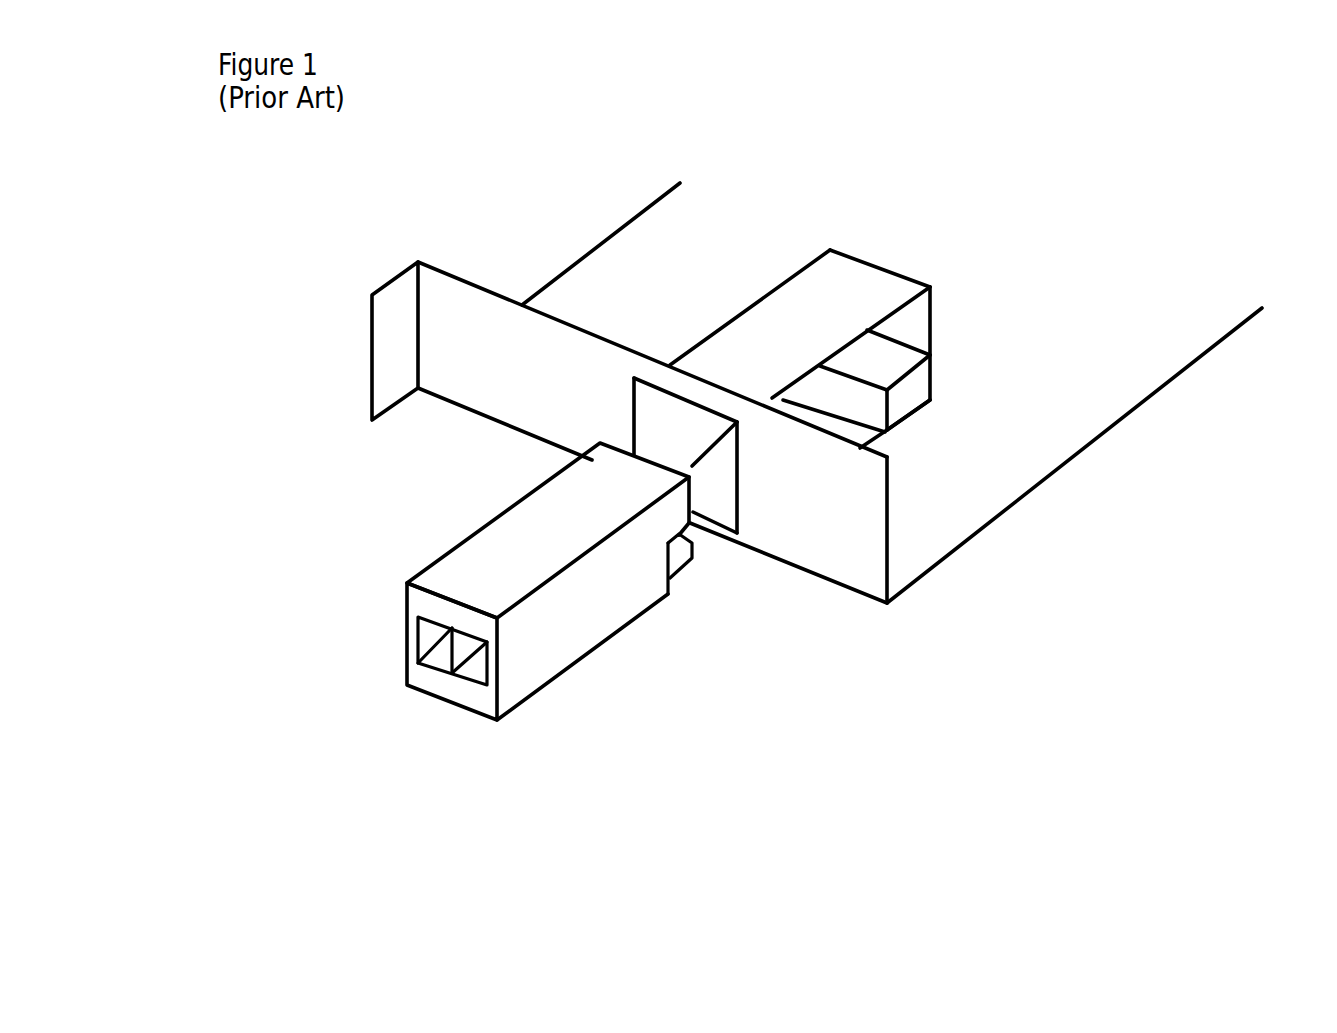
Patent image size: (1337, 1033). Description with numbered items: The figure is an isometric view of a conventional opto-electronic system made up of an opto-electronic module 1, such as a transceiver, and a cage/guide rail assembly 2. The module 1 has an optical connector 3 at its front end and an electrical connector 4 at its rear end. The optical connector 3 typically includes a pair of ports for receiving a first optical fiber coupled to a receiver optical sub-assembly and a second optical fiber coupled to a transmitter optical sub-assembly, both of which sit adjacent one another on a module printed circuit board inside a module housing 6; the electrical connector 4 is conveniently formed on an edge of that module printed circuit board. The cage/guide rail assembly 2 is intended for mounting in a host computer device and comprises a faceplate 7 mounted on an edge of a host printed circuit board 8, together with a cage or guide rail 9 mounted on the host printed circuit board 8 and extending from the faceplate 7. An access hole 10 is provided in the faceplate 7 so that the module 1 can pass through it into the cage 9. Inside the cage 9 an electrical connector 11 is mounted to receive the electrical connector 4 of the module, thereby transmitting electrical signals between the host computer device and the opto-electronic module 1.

The opto-electronic module 1 is at (530, 606).
The cage/guide rail assembly 2 is at (622, 313).
The optical connector 3 is at (433, 658).
The electrical connector 4 is at (685, 557).
The module housing 6 is at (550, 647).
The faceplate 7 is at (443, 290).
The host printed circuit board 8 is at (892, 393).
The cage or guide rail 9 is at (833, 267).
The access hole 10 is at (723, 501).
The electrical connector 11 is at (917, 393).